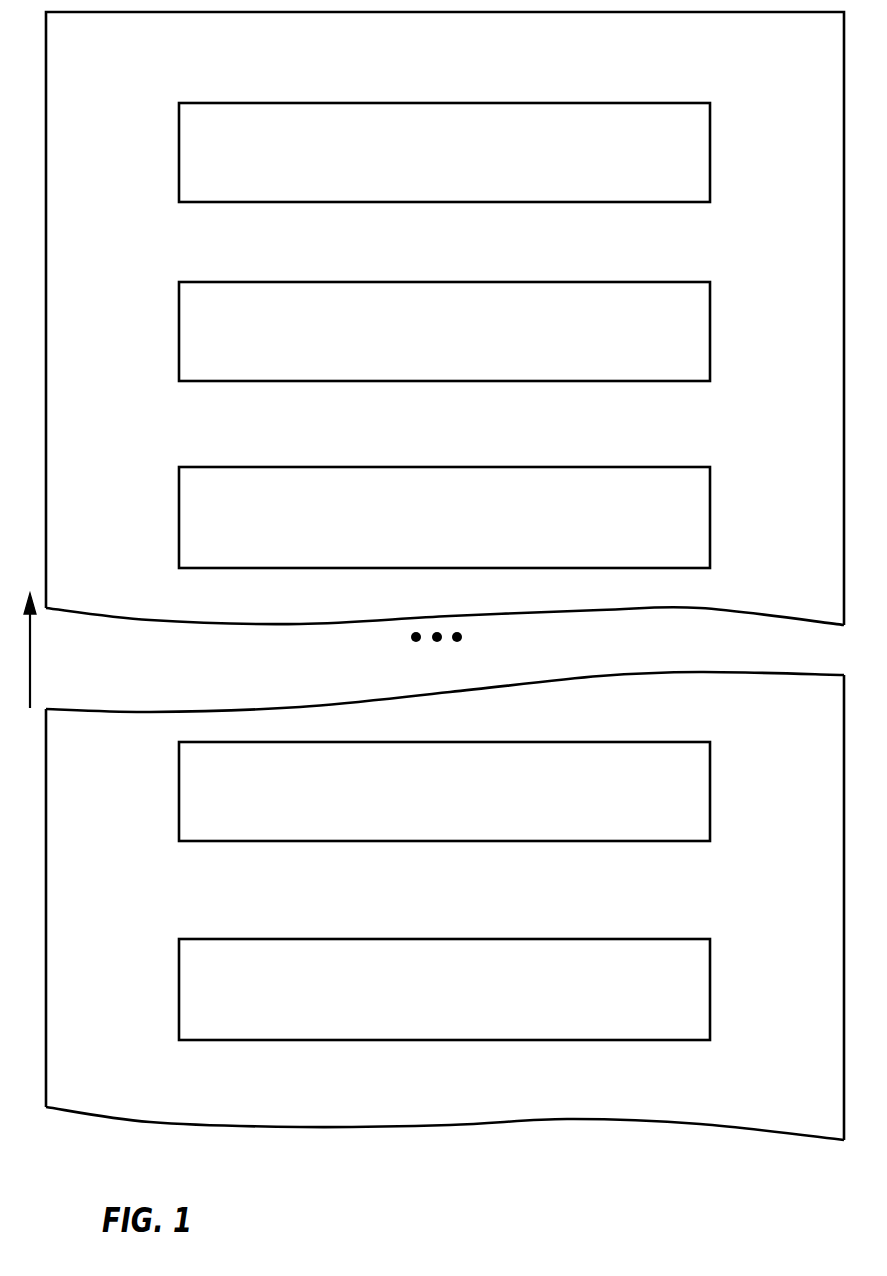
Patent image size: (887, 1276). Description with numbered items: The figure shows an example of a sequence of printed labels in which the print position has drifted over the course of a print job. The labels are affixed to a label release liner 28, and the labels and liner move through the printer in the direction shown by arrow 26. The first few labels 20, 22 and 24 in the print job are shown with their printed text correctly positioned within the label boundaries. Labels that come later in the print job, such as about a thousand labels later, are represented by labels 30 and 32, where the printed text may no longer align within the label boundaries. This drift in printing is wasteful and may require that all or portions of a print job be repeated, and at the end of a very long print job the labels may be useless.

The label 20 is at (179, 153).
The label 22 is at (654, 381).
The label 24 is at (179, 518).
The arrow 26 is at (30, 623).
The label release liner 28 is at (138, 593).
The label 30 is at (710, 791).
The label 32 is at (179, 988).